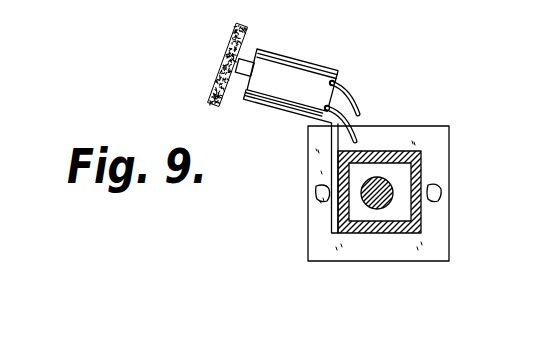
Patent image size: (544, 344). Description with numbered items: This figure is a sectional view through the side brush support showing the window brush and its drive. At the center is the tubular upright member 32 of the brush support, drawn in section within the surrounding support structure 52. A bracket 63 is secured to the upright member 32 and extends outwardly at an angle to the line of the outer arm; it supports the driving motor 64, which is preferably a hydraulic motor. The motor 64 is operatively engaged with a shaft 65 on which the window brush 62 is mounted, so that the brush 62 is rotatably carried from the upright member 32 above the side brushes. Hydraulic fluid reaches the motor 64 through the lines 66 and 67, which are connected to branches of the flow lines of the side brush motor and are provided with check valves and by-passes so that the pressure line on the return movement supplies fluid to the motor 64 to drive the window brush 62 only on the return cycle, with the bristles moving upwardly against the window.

The window brush 62 is at (211, 73).
The shaft 65 is at (257, 50).
The driving motor 64 is at (288, 55).
The bracket 63 is at (264, 104).
The line 66 is at (346, 88).
The line 67 is at (360, 121).
The housing 52 is at (449, 176).
The tubular upright member 32 is at (421, 220).